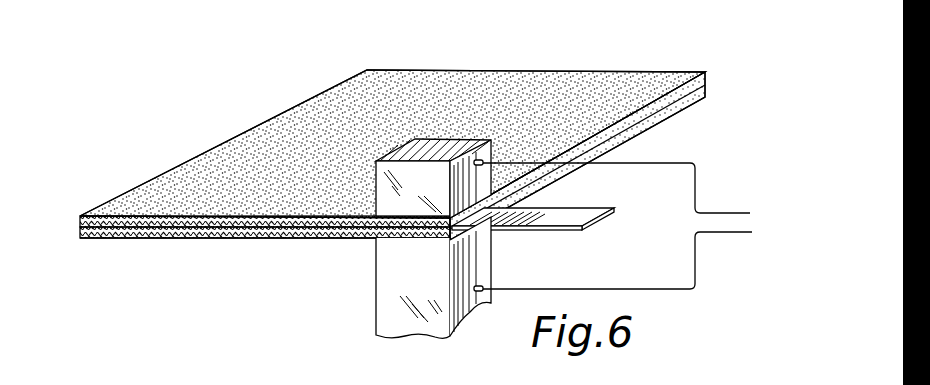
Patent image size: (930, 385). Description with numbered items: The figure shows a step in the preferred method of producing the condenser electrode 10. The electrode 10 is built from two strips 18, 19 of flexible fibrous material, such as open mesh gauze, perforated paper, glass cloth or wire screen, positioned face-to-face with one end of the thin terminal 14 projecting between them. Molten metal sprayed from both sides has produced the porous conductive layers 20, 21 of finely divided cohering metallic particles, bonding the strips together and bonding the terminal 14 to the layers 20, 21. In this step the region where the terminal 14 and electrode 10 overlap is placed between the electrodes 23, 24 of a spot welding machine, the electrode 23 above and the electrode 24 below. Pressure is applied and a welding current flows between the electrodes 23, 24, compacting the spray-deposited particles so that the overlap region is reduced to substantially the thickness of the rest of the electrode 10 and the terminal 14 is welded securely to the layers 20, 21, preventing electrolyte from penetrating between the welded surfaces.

The electrode 10 is at (596, 68).
The terminal 14 is at (552, 218).
The strip 18 is at (80, 219).
The strip 19 is at (80, 232).
The conductive layer 20 is at (162, 204).
The conductive layer 21 is at (259, 240).
The electrode of spot welding machine 23 is at (563, 178).
The electrode of spot welding machine 24 is at (564, 277).